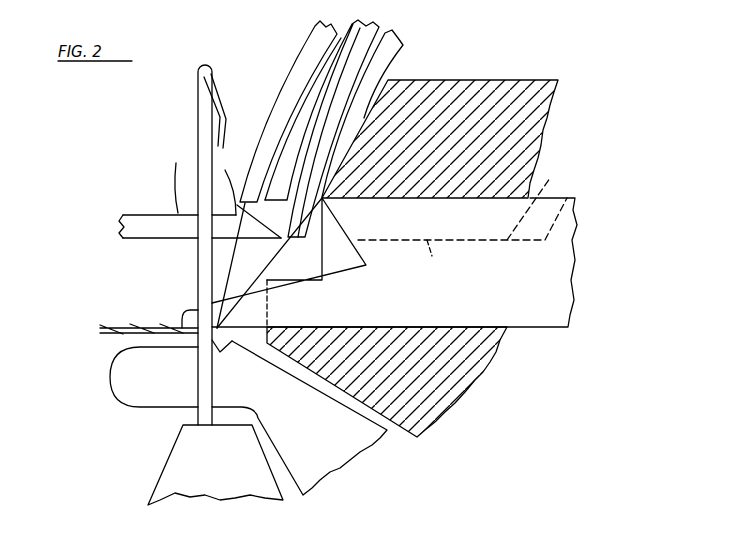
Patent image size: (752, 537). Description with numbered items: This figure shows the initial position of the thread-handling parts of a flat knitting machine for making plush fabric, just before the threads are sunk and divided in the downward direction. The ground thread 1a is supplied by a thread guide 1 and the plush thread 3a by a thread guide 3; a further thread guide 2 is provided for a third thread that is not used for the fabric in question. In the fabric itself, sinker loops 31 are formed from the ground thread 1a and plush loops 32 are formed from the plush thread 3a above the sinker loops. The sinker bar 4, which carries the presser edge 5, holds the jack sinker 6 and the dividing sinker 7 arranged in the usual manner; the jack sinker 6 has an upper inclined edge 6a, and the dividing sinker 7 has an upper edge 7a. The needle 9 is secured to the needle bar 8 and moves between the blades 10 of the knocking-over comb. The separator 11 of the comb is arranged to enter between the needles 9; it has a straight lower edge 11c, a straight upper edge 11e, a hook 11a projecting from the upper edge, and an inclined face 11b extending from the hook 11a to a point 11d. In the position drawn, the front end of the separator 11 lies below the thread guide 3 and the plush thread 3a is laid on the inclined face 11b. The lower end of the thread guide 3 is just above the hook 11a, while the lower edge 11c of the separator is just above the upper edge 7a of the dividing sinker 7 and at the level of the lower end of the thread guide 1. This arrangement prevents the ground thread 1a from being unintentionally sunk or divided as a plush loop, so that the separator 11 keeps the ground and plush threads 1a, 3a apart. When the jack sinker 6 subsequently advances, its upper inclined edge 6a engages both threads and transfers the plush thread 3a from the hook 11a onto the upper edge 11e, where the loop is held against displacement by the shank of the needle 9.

The thread guide 1 is at (390, 46).
The ground thread 1a is at (274, 264).
The thread guide 2 is at (364, 30).
The thread guide 3 is at (315, 33).
The plush thread 3a is at (235, 250).
The sinker bar 4 is at (482, 360).
The presser edge 5 is at (267, 313).
The jack sinker 6 is at (578, 237).
The upper inclined edge 6a is at (342, 228).
The dividing sinker 7 is at (462, 202).
The upper edge 7a is at (439, 258).
The needle bar 8 is at (168, 464).
The needle 9 is at (199, 83).
The blade 10 is at (115, 377).
The separator 11 is at (150, 216).
The hook 11a is at (236, 181).
The inclined face 11b is at (248, 223).
The lower edge 11c is at (143, 240).
The point 11d is at (242, 265).
The upper edge 11e is at (172, 179).
The sinker loop 31 is at (105, 341).
The plush loop 32 is at (101, 326).